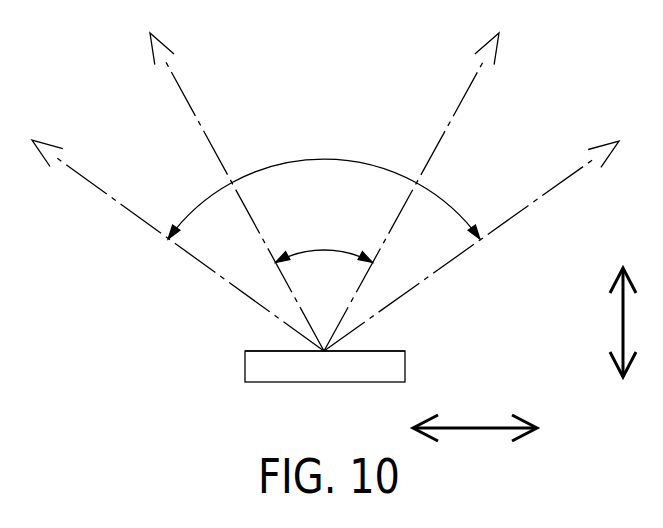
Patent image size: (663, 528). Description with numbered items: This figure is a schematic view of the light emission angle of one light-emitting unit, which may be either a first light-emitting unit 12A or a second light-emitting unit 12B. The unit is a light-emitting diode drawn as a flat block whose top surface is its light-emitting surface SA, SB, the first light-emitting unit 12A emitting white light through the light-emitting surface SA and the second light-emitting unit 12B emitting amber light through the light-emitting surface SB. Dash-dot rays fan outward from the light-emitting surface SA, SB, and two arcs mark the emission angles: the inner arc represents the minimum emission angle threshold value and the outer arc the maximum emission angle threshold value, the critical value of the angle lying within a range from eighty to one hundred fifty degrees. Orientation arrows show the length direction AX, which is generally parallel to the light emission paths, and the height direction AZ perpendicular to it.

The first light-emitting unit 12A is at (239, 361).
The second light-emitting unit 12B is at (253, 366).
The light-emitting surface SA is at (388, 326).
The light-emitting surface SB is at (392, 351).
The height direction AZ is at (602, 322).
The length direction AX is at (475, 414).